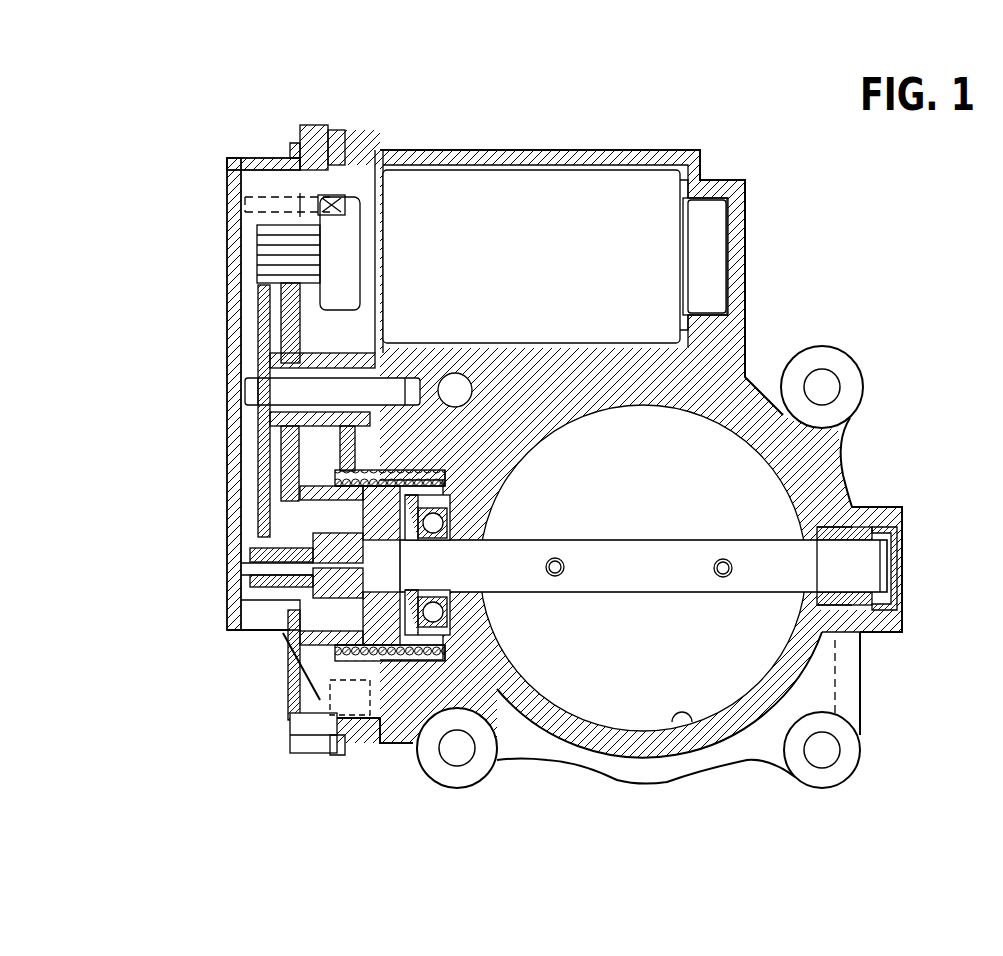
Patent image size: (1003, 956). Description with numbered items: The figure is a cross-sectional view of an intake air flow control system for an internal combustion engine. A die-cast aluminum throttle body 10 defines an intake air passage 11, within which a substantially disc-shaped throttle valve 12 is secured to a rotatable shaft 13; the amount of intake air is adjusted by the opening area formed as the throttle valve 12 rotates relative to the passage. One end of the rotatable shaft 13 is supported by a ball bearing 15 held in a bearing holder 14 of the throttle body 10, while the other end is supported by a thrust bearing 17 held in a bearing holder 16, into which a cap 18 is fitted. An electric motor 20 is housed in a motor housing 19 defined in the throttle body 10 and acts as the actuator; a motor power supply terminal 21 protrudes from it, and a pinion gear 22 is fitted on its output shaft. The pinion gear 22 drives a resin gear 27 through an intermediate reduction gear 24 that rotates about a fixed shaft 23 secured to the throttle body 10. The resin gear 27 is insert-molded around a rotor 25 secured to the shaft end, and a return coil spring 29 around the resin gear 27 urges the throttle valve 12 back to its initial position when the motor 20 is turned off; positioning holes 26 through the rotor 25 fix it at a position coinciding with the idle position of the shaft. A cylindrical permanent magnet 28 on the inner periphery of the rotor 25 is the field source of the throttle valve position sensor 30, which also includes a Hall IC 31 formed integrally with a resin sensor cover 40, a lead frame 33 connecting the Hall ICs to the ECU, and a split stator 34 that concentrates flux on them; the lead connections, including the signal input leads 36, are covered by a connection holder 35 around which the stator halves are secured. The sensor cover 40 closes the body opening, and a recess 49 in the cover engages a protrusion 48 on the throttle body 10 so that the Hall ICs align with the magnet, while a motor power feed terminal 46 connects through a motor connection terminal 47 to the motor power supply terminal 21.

The throttle body 10 is at (742, 395).
The intake air passage 11 is at (690, 718).
The throttle valve 12 is at (770, 398).
The rotatable shaft 13 is at (873, 562).
The bearing holder 14 is at (438, 495).
The ball bearing 15 is at (440, 523).
The bearing holder 16 is at (873, 508).
The thrust bearing 17 is at (858, 523).
The cap 18 is at (902, 572).
The motor housing 19 is at (533, 178).
The electric motor 20 is at (612, 187).
The motor power supply terminal 21 is at (335, 197).
The pinion gear 22 is at (262, 258).
The fixed shaft 23 is at (258, 395).
The intermediate reduction gear 24 is at (290, 352).
The rotor 25 is at (298, 640).
The positioning holes 26 is at (440, 650).
The resin gear 27 is at (260, 473).
The cylindrical permanent magnet 28 is at (310, 618).
The return coil spring 29 is at (470, 660).
The throttle valve position sensor 30 is at (203, 623).
The Hall IC 31 is at (400, 580).
The lead frame 33 is at (258, 425).
The split stator 34 is at (260, 512).
The connection holder 35 is at (258, 540).
The signal input leads 36 is at (240, 560).
The sensor cover 40 is at (230, 462).
The motor power feed terminal 46 is at (228, 206).
The motor connection terminal 47 is at (303, 178).
The protrusion 48 is at (303, 737).
The recess 49 is at (342, 733).